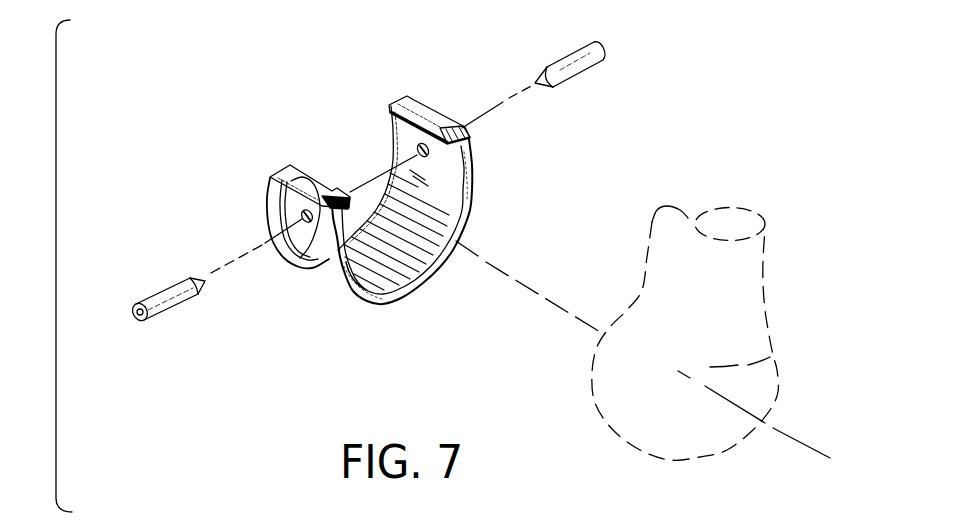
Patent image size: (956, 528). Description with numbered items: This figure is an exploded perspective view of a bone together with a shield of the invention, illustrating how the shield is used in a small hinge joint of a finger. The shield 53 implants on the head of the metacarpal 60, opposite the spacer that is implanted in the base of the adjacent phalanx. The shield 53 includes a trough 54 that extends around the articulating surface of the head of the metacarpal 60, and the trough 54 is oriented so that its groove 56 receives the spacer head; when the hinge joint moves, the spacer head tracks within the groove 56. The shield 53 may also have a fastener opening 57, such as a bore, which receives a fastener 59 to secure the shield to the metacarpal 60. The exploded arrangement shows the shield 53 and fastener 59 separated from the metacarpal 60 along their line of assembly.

The pin hole in left wall 53 is at (284, 260).
The half shell 54 is at (419, 100).
The pin 56 is at (435, 124).
The pin hole in right wall 57 is at (417, 152).
The pin 59 is at (181, 277).
The hub 60 is at (747, 365).